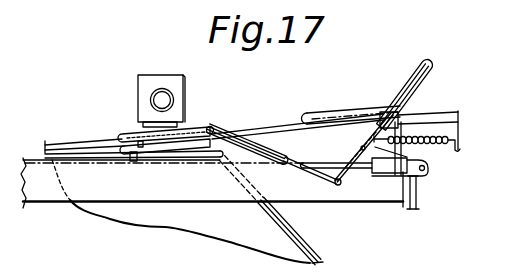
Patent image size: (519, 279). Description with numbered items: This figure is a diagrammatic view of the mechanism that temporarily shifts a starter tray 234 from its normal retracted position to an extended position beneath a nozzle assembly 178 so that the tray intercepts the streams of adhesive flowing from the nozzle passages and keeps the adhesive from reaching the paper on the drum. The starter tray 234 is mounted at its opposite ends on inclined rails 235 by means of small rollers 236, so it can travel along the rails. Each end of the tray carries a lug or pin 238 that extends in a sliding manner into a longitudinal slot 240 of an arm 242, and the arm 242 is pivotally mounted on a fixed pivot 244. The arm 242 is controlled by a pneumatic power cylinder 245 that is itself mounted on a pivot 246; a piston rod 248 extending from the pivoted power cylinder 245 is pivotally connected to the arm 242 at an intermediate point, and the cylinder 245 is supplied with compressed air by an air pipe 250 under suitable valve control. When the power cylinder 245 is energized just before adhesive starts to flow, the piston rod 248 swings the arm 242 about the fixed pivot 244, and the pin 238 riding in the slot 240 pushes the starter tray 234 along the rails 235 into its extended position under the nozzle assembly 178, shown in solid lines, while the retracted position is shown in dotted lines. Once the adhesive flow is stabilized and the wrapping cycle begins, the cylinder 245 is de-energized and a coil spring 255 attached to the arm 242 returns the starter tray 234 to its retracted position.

The nozzle assembly 178 is at (179, 85).
The starter tray 234 is at (195, 126).
The inclined rail 235 is at (288, 128).
The roller 236 is at (134, 133).
The lug or pin 238 is at (209, 126).
The longitudinal slot 240 is at (218, 132).
The arm 242 is at (284, 163).
The fixed pivot 244 is at (296, 178).
The pneumatic power cylinder 245 is at (386, 174).
The pivot 246 is at (424, 175).
The piston rod 248 is at (367, 152).
The air pipe 250 is at (417, 207).
The coil spring 255 is at (440, 150).